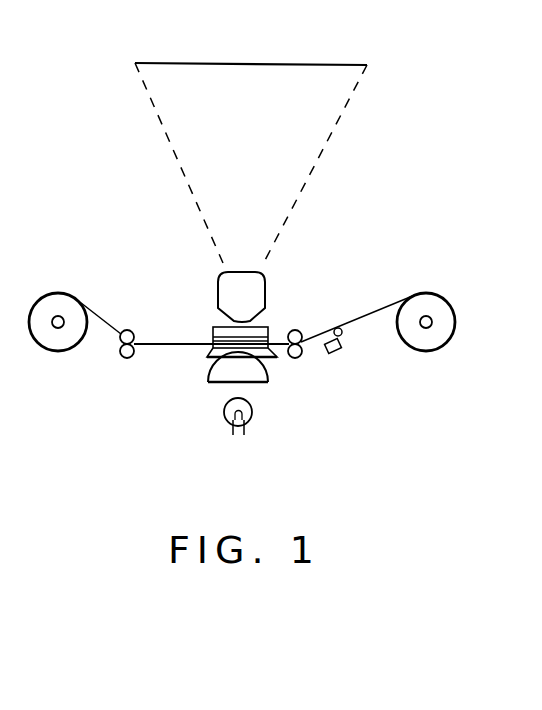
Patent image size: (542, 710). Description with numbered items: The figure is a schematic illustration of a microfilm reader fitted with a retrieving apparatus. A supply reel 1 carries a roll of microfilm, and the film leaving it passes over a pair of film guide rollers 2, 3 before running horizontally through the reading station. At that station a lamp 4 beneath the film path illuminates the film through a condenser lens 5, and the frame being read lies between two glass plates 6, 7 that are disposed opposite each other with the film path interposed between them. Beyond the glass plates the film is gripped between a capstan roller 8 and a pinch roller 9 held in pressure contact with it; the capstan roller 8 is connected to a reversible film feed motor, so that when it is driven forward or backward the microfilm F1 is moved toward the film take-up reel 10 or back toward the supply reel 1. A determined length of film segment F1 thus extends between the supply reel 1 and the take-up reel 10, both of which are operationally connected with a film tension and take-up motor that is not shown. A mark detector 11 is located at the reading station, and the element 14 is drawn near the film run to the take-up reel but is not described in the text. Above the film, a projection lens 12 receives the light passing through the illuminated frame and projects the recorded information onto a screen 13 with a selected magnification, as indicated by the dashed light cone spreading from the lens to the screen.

The supply reel 1 is at (55, 351).
The film guide roller 2 is at (124, 358).
The film guide roller 3 is at (127, 329).
The lamp 4 is at (252, 418).
The condenser lens 5 is at (213, 385).
The glass plate 6 is at (207, 356).
The glass plate 7 is at (213, 340).
The capstan roller 8 is at (298, 359).
The pinch roller 9 is at (299, 328).
The film take-up reel 10 is at (428, 351).
The mark detector 11 is at (213, 330).
The projection lens 12 is at (262, 281).
The screen 13 is at (316, 62).
The sensor 14 is at (338, 352).
The microfilm F1 is at (378, 310).